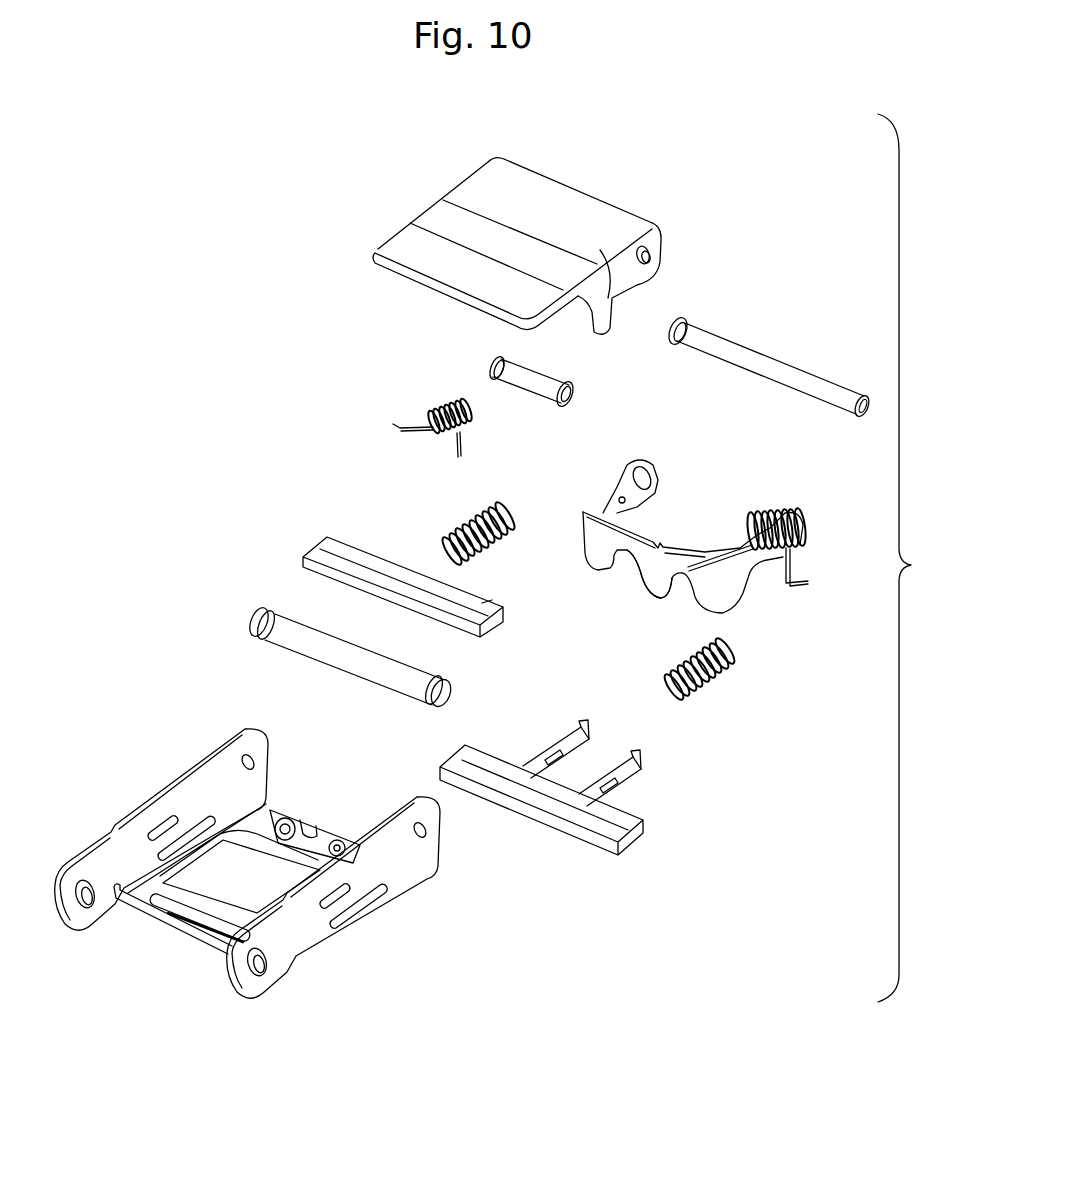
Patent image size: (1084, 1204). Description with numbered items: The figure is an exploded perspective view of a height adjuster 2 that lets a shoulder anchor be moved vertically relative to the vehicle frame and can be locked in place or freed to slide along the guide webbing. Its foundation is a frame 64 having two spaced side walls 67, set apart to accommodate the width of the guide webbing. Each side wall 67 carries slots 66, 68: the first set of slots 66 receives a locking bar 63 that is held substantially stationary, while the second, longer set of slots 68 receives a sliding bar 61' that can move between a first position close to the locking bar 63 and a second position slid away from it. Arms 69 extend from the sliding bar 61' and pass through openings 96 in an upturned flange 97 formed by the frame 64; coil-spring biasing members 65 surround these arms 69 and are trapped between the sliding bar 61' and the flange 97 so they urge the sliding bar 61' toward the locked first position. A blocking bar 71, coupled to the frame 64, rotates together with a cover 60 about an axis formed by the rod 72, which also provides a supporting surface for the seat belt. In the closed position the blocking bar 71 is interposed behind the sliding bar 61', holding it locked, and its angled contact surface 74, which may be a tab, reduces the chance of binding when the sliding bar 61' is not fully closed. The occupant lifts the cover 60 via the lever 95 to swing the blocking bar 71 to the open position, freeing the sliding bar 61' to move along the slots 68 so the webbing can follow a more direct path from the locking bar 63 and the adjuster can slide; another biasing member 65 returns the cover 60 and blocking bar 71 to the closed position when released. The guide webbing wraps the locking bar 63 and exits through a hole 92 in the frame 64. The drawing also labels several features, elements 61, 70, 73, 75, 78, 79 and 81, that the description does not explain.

The height adjuster 2 is at (492, 581).
The cover 60 is at (519, 232).
The lever 95 is at (400, 245).
The pivot hole of lever 79 is at (655, 255).
The pivot pin 73 is at (537, 375).
The rod 72 is at (768, 358).
The biasing member 65 is at (465, 438).
The blocking bar 71 is at (693, 539).
The contact surface 74 is at (650, 590).
The locking bar 63 is at (347, 548).
The pin 61 is at (350, 661).
The sliding bar 61' is at (570, 776).
The arms 69 is at (574, 724).
The prong 70 is at (611, 742).
The frame 64 is at (275, 883).
The side walls 67 is at (215, 780).
The pivot hole 78 is at (251, 762).
The slots 66 is at (160, 822).
The slots 68 is at (190, 838).
The openings 96 is at (331, 812).
The upturned flange 97 is at (310, 832).
The tab 81 is at (185, 915).
The hole 92 is at (237, 905).
The hole 75 is at (92, 922).